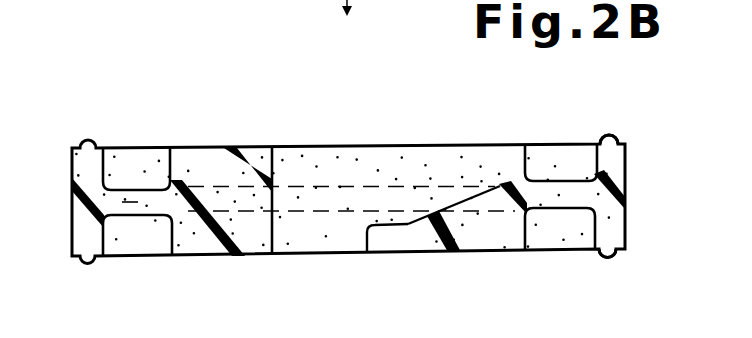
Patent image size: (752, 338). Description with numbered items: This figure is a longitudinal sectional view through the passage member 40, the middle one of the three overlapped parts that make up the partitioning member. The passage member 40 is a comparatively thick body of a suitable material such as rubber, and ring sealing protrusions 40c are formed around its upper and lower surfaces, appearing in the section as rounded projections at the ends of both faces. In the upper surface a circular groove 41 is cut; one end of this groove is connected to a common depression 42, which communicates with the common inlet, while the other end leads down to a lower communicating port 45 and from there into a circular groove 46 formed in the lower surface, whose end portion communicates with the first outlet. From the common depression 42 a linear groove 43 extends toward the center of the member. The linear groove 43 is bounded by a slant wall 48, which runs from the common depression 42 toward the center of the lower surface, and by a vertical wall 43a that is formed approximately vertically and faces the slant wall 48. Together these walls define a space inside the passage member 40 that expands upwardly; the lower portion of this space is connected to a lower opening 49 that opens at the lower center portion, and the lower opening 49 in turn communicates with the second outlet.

The passage member 40 is at (140, 112).
The ring sealing protrusions 40c is at (608, 135).
The circular groove 41 is at (122, 160).
The common depression 42 is at (577, 157).
The linear groove 43 is at (501, 183).
The vertical wall 43a is at (273, 173).
The lower communicating port 45 is at (567, 228).
The circular groove 46 is at (133, 240).
The slant wall 48 is at (448, 205).
The lower opening 49 is at (320, 237).